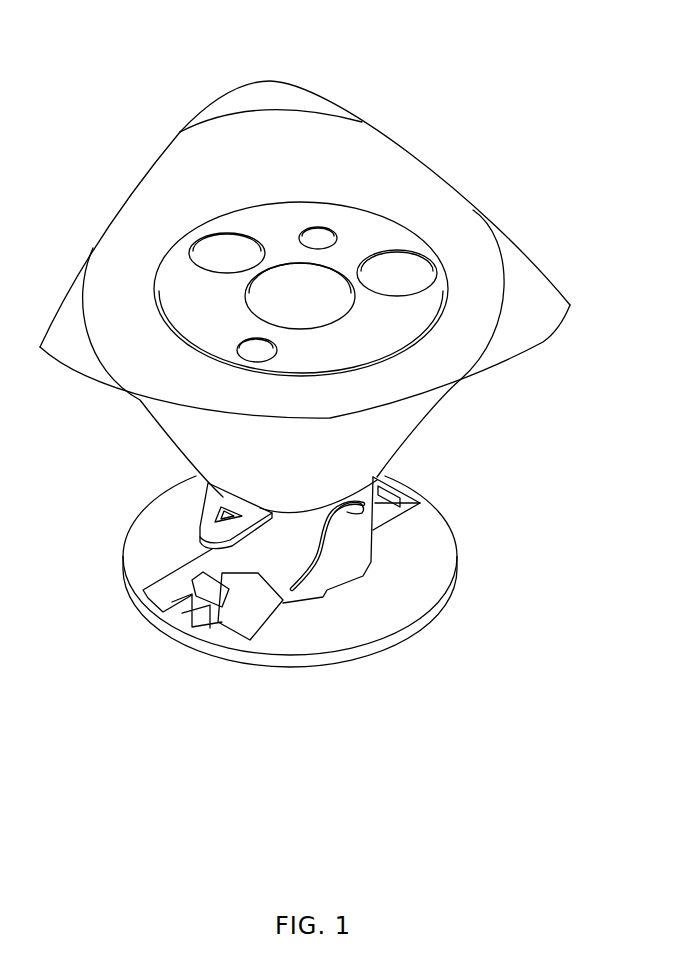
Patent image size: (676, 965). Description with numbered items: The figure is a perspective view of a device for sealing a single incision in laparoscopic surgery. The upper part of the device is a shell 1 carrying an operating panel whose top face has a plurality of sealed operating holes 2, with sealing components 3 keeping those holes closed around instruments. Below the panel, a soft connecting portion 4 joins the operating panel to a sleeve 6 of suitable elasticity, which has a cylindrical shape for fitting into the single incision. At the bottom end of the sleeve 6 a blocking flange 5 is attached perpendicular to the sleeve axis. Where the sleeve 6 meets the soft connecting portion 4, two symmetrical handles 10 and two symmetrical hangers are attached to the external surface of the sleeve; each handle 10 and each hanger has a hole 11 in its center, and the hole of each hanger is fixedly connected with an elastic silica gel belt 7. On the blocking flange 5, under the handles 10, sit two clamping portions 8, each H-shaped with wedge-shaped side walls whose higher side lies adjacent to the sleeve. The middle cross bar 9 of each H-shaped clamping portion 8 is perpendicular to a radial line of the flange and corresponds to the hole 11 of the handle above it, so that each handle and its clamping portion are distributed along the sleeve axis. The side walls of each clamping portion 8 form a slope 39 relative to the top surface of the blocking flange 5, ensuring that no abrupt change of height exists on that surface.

The shell 1 is at (347, 163).
The operating hole 2 is at (292, 303).
The sealing components 3 is at (397, 325).
The soft connecting portion 4 is at (370, 432).
The blocking flange 5 is at (437, 553).
The sleeve 6 is at (352, 550).
The elastic silica gel belt 7 is at (315, 562).
The clamping portion 8 is at (233, 603).
The cross bar 9 is at (197, 607).
The handle 10 is at (207, 535).
The hole 11 is at (210, 487).
The slope 39 is at (247, 617).